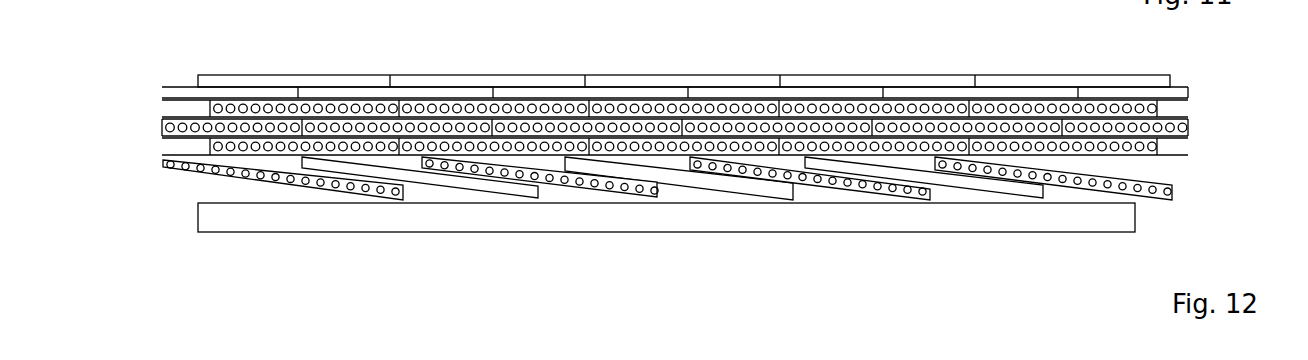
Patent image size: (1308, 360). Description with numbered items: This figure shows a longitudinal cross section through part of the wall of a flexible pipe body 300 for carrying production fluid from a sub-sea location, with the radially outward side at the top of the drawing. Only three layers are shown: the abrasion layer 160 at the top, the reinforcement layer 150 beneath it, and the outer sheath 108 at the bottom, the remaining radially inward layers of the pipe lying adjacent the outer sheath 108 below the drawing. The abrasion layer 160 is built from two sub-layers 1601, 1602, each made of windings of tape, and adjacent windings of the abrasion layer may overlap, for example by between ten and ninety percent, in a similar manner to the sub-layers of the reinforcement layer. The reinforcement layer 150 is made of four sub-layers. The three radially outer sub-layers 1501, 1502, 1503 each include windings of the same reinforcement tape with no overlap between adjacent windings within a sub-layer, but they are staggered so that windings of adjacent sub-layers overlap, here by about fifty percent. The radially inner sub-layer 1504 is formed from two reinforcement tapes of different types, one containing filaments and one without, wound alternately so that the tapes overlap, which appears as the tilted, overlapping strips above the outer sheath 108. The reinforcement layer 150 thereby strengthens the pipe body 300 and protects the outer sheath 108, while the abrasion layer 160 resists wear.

The flexible pipe body 300 is at (792, 54).
The abrasion layer 160 is at (1170, 81).
The first abrasion sub-layer 1601 is at (198, 75).
The second abrasion sub-layer 1602 is at (163, 89).
The reinforcement layer 150 is at (1192, 102).
The first reinforcement sub-layer 1501 is at (160, 108).
The second reinforcement sub-layer 1502 is at (160, 128).
The third reinforcement sub-layer 1503 is at (160, 148).
The radially inner reinforcement sub-layer 1504 is at (160, 184).
The outer sheath 108 is at (1135, 221).